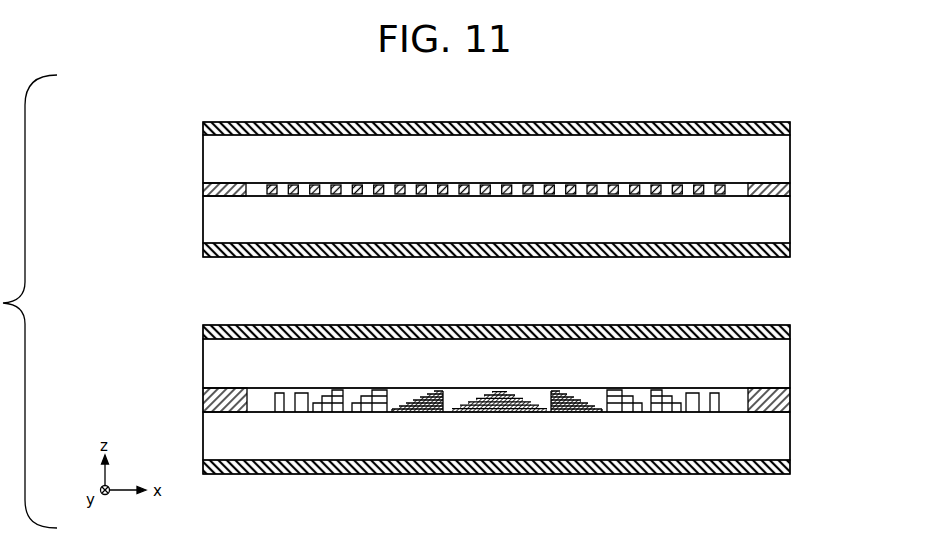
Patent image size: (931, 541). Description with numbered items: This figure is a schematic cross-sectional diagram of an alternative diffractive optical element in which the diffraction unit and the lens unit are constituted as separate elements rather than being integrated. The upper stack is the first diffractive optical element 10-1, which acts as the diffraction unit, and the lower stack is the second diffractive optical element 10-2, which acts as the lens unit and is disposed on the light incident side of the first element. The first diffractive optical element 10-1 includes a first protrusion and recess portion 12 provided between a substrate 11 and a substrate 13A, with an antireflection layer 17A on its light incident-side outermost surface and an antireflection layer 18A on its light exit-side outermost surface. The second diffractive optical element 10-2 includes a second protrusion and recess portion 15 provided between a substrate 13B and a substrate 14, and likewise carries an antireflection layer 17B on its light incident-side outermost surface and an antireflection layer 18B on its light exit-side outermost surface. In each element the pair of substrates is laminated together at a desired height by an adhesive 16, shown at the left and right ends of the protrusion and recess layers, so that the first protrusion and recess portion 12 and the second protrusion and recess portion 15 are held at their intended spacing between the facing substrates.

The first diffractive optical element 10-1 is at (174, 125).
The second diffractive optical element 10-2 is at (174, 325).
The substrate 11 is at (790, 160).
The first protrusion and recess portion 12 is at (727, 181).
The substrate 13A is at (790, 226).
The substrate 13B is at (790, 364).
The substrate 14 is at (790, 436).
The second protrusion and recess portion 15 is at (731, 416).
The adhesive 16 is at (228, 183).
The antireflection layer 17A is at (790, 128).
The antireflection layer 17B is at (790, 331).
The antireflection layer 18A is at (790, 251).
The antireflection layer 18B is at (790, 466).